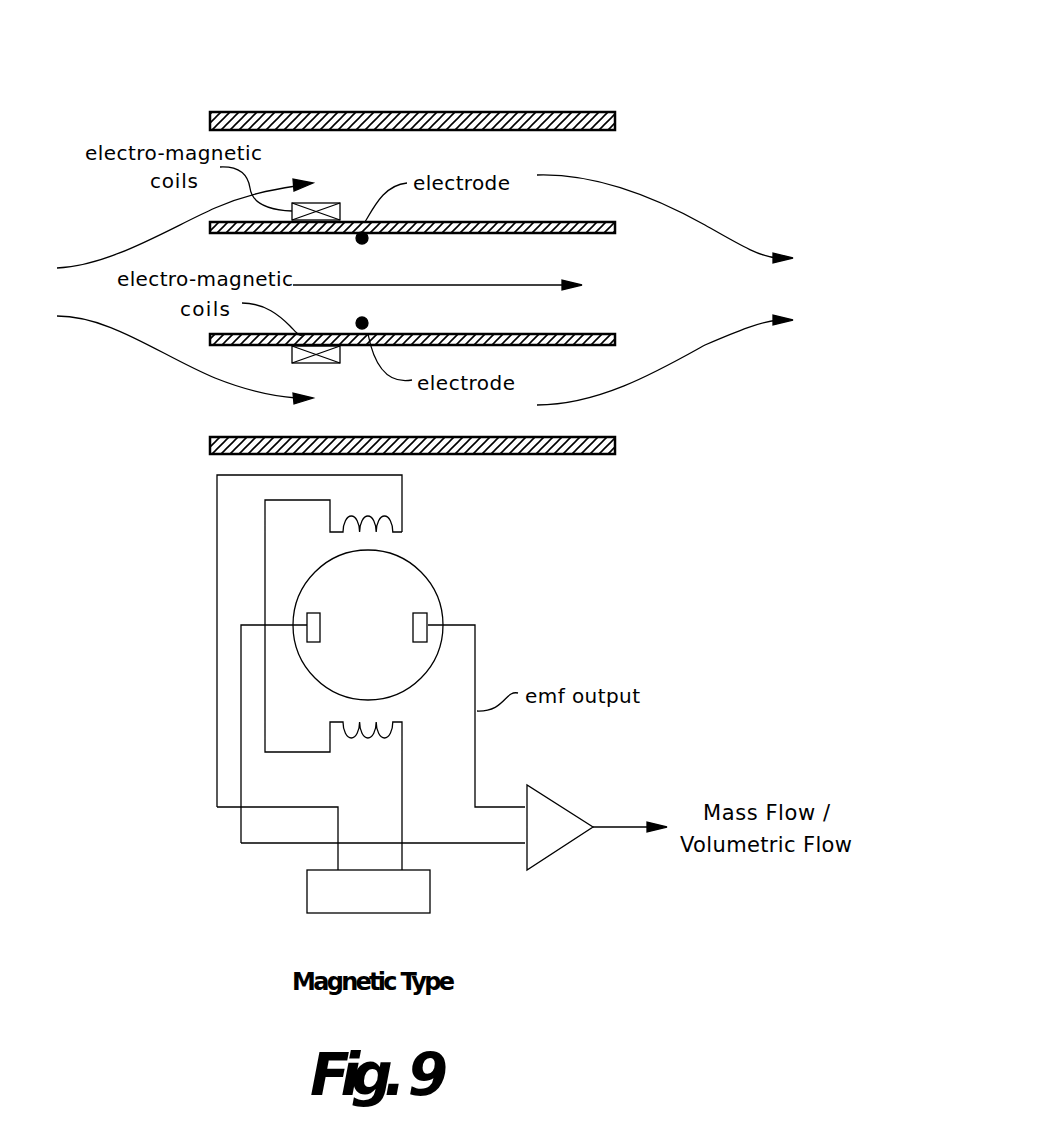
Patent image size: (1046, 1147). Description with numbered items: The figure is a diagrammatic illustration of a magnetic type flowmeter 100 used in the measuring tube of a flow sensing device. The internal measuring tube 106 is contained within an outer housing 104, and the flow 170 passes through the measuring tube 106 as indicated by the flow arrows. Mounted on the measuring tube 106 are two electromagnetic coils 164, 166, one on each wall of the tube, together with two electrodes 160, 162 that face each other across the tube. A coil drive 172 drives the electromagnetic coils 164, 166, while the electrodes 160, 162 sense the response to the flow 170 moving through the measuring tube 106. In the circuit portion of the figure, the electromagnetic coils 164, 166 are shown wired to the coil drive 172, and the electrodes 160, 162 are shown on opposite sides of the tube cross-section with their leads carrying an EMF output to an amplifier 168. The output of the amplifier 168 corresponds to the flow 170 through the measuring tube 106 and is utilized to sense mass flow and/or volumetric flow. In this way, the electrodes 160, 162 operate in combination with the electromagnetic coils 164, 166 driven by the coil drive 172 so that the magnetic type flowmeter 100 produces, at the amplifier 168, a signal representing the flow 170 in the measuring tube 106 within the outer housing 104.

The magnetic type flow sensor 100 is at (462, 72).
The outer housing 104 is at (575, 112).
The measuring tube 106 is at (592, 222).
The electrode 160 is at (366, 243).
The electrode 162 is at (366, 319).
The electromagnetic coil 164 is at (320, 203).
The electromagnetic coil 166 is at (325, 363).
The amplifier 168 is at (563, 807).
The flow 170 is at (545, 285).
The coil drive 172 is at (430, 890).